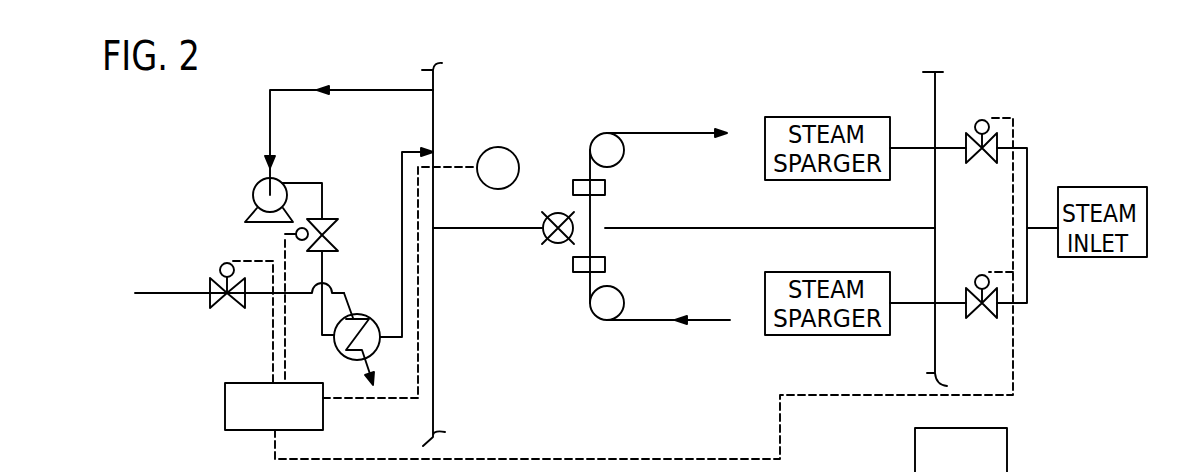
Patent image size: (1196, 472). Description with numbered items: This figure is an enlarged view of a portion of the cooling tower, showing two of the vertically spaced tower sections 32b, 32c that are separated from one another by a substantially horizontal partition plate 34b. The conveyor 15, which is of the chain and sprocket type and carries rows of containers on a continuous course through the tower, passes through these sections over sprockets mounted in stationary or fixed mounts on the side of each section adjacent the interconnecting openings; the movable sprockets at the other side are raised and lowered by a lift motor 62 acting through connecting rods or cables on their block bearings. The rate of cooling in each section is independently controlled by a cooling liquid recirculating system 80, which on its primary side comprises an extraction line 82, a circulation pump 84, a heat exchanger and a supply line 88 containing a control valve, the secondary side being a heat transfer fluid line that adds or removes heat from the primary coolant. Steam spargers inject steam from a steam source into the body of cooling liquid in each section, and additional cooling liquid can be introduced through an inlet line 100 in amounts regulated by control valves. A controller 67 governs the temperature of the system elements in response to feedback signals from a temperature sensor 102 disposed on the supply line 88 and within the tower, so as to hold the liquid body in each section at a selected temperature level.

The conveyor 15 is at (634, 322).
The tower section 32b is at (553, 400).
The tower section 32c is at (553, 128).
The partition plate 34b is at (680, 232).
The lift motor 62 is at (1007, 445).
The controller 67 is at (225, 396).
The cooling liquid recirculating system 80 is at (228, 230).
The extraction line 82 is at (330, 88).
The circulation pump 84 is at (257, 184).
The supply line 88 is at (402, 252).
The inlet line 100 is at (176, 294).
The temperature sensor 102 is at (519, 156).